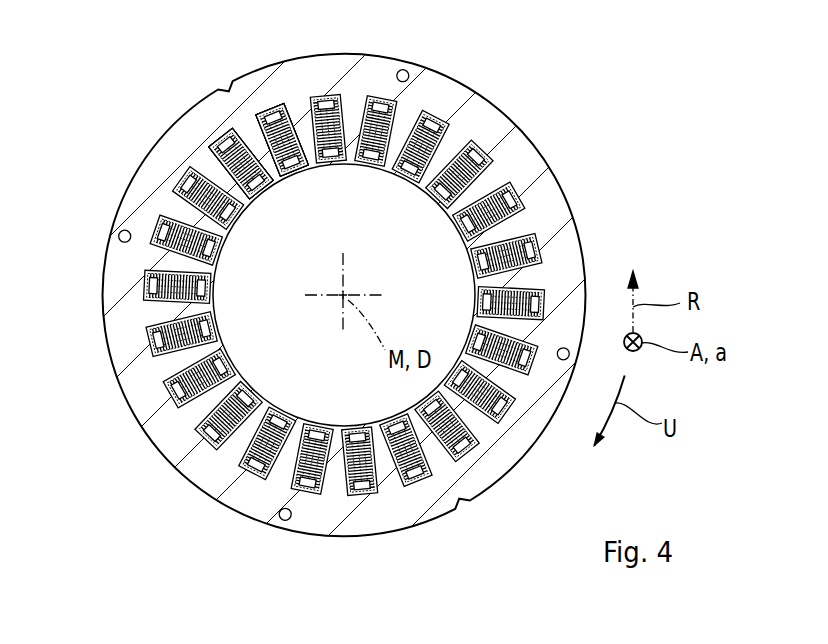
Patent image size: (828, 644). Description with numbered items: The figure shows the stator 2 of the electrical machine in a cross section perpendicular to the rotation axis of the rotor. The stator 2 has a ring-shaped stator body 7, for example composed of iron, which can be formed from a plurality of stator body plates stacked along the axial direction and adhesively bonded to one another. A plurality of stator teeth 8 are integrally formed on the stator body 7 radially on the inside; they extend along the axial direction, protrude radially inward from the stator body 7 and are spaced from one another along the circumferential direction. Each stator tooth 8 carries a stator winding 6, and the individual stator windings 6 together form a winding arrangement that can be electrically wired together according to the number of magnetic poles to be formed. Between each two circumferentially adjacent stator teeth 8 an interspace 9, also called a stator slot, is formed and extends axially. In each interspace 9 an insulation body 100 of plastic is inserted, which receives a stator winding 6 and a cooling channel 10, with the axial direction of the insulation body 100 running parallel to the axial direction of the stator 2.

The stator 2 is at (364, 272).
The stator winding 6 is at (280, 33).
The stator body 7 is at (485, 110).
The stator tooth 8 is at (278, 178).
The interspace 9 is at (215, 103).
The insulation body 100 is at (110, 152).
The cooling channel 10 is at (152, 108).